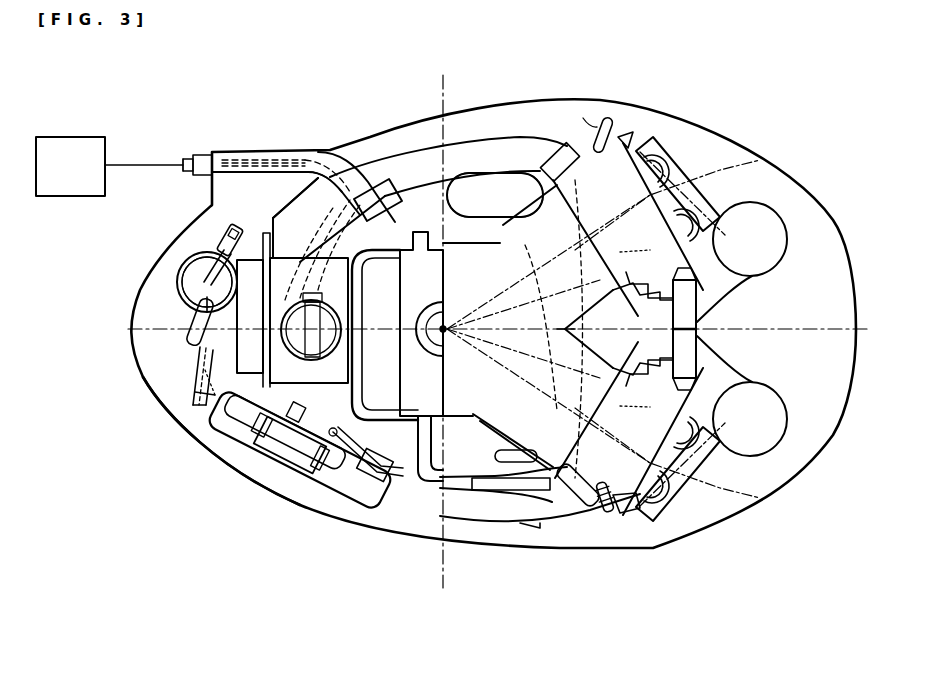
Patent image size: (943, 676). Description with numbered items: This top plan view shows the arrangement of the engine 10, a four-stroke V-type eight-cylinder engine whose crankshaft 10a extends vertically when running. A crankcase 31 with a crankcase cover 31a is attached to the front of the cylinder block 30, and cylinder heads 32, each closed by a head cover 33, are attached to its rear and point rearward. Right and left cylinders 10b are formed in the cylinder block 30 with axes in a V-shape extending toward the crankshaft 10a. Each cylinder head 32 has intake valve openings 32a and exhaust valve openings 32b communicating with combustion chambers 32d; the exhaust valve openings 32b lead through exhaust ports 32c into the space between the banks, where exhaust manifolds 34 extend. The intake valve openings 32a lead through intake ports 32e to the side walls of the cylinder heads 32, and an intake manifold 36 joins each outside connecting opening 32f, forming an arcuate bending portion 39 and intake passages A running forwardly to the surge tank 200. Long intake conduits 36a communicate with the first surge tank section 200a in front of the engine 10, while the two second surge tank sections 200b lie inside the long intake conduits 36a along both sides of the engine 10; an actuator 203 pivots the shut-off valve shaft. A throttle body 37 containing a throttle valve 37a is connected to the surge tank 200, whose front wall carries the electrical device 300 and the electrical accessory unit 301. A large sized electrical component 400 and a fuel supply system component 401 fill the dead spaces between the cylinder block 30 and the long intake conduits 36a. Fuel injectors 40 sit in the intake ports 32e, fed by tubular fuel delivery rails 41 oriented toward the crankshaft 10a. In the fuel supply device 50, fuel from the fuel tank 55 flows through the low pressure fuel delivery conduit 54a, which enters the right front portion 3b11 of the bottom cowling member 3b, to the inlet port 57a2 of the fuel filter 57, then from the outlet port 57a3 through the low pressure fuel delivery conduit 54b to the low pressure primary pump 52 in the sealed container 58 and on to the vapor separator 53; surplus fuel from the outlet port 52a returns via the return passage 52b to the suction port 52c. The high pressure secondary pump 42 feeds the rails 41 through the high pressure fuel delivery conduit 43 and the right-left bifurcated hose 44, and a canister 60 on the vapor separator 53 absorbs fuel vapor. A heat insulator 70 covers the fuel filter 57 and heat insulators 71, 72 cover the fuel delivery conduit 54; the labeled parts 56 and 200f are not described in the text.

The engine 10 is at (730, 492).
The crankshaft 10a is at (445, 343).
The cylinders 10b is at (590, 332).
The cylinder block 30 is at (466, 235).
The crankcase 31 is at (412, 228).
The crankcase cover 31a is at (403, 291).
The cylinder heads 32 is at (660, 233).
The intake valve openings 32a is at (585, 246).
The exhaust valve openings 32b is at (523, 329).
The exhaust ports 32c is at (649, 327).
The combustion chambers 32d is at (548, 329).
The intake ports 32e is at (600, 207).
The outside connecting opening 32f is at (563, 173).
The head cover 33 is at (680, 170).
The exhaust manifolds 34 is at (763, 257).
The intake manifold 36 is at (463, 153).
The long intake conduits 36a is at (357, 175).
The throttle body 37 is at (235, 345).
The throttle valve 37a is at (247, 463).
The bending portion 39 is at (513, 127).
The fuel injectors 40 is at (633, 145).
The fuel delivery rails 41 is at (603, 143).
The high pressure secondary pump 42 is at (528, 490).
The high pressure fuel delivery conduit 43 is at (525, 492).
The right-left bifurcated hose 44 is at (563, 342).
The fuel supply device 50 is at (227, 442).
The low pressure primary pump 52 is at (292, 447).
The outlet port 52a is at (340, 465).
The return passage 52b is at (309, 320).
The suction port 52c is at (243, 417).
The vapor separator 53 is at (468, 492).
The fuel delivery conduit 54 is at (272, 150).
The low pressure fuel delivery conduit 54a is at (243, 152).
The low pressure fuel delivery conduit 54b is at (205, 370).
The fuel tank 55 is at (78, 137).
The lever 56 is at (385, 495).
The fuel filter 57 is at (199, 281).
The inlet port 57a2 is at (190, 308).
The outlet port 57a3 is at (192, 238).
The sealed container 58 is at (368, 477).
The canister 60 is at (515, 505).
The heat insulator 70 is at (177, 283).
The heat insulator 71 is at (313, 150).
The heat insulator 72 is at (195, 392).
The surge tank 200 is at (263, 250).
The first surge tank section 200a is at (205, 205).
The second surge tank sections 200b is at (397, 222).
The bracket portion 200f is at (205, 312).
The actuator 203 is at (380, 190).
The electrical device 300 is at (200, 348).
The electrical accessory unit 301 is at (285, 217).
The large sized electrical component 400 is at (487, 200).
The component for a fuel supply system 401 is at (425, 530).
The bottom cowling member 3b is at (145, 400).
The right front portion 3b11 is at (212, 152).
The intake passages A is at (402, 140).